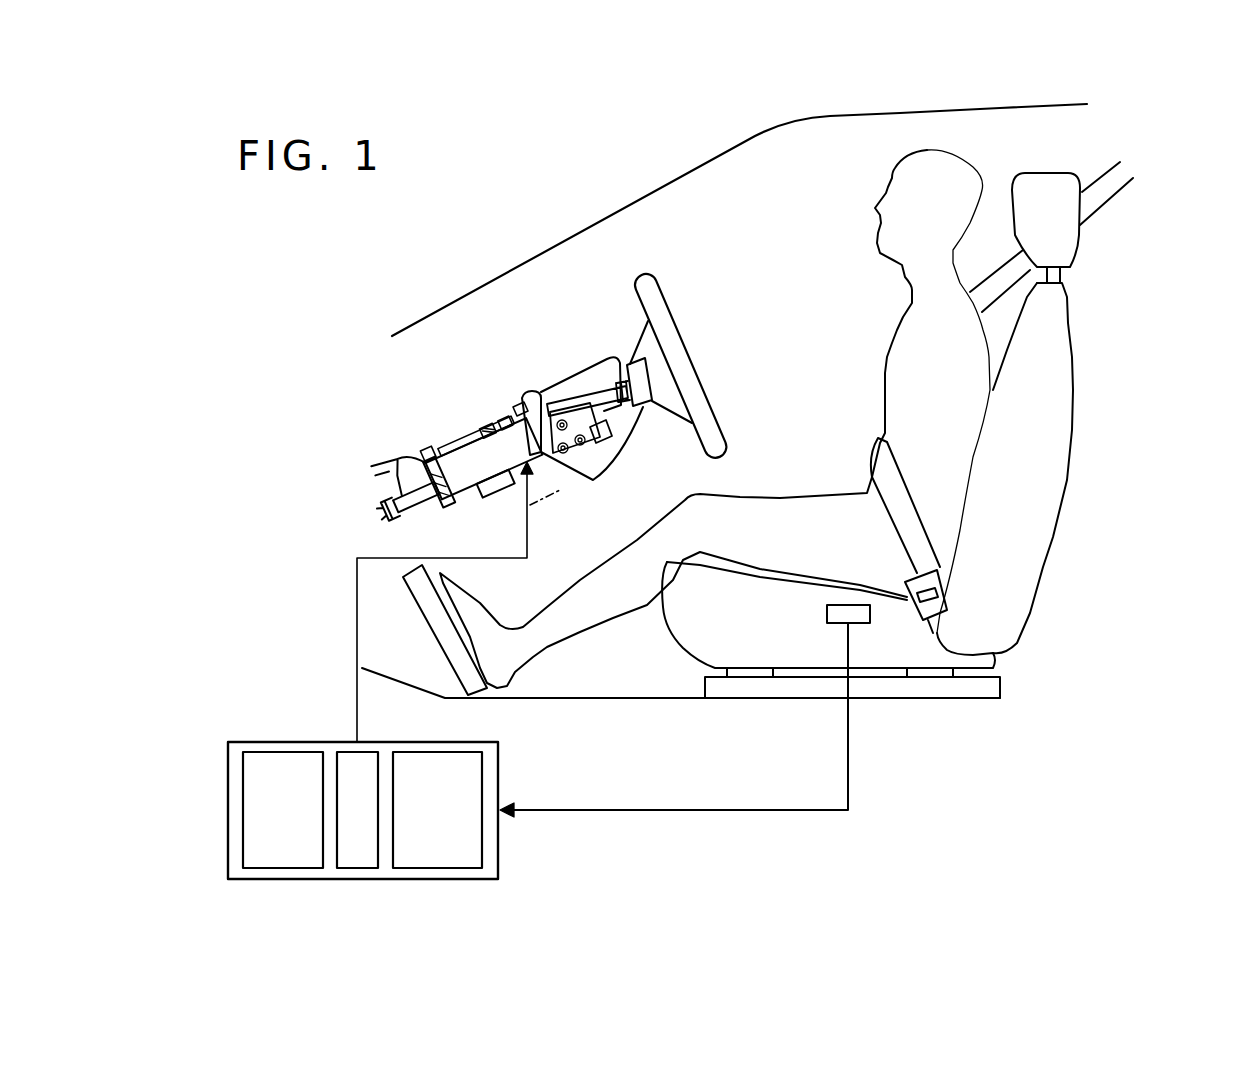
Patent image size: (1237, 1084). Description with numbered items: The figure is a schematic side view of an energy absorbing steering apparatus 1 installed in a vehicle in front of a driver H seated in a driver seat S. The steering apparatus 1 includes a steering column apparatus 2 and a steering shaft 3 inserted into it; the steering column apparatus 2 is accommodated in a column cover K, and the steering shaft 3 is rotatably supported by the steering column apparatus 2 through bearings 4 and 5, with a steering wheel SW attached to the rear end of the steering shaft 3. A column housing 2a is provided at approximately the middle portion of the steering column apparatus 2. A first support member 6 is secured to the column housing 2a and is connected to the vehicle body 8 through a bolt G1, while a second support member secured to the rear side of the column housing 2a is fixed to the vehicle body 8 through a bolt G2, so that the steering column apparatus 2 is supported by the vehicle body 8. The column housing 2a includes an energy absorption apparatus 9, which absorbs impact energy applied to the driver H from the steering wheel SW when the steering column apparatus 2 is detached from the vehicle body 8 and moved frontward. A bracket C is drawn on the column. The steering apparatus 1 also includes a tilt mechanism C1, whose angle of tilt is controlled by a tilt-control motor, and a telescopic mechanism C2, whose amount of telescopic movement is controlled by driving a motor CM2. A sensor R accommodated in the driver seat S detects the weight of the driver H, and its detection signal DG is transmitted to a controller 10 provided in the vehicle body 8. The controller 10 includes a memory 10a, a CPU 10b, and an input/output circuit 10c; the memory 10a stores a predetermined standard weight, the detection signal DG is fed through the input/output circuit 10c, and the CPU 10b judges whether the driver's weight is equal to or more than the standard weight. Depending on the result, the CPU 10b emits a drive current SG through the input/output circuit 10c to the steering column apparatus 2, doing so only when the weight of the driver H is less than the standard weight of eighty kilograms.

The steering apparatus 1 is at (569, 342).
The steering column apparatus 2 is at (598, 393).
The column housing 2a is at (482, 455).
The steering shaft 3 is at (387, 511).
The bearing 4 is at (439, 482).
The bearing 5 is at (618, 412).
The first support member 6 is at (416, 497).
The vehicle body 8 is at (402, 474).
The energy absorption apparatus 9 is at (490, 431).
The controller 10 is at (498, 762).
The memory 10a is at (281, 870).
The central processing unit (CPU) 10b is at (357, 870).
The input/output circuit 10c is at (460, 870).
The column bracket C is at (532, 393).
The tilt mechanism C1 is at (585, 472).
The telescopic mechanism C2 is at (496, 484).
The motor for telescopic control CM2 is at (445, 602).
The bolt G1 is at (428, 454).
The bolt (connection bolt) G2 is at (518, 407).
The driver H is at (960, 152).
The column cover K is at (586, 361).
The sensor R is at (827, 615).
The driver seat S is at (1073, 318).
The steering wheel SW is at (661, 294).
The drive current SG is at (380, 727).
The detection signal DG is at (674, 720).